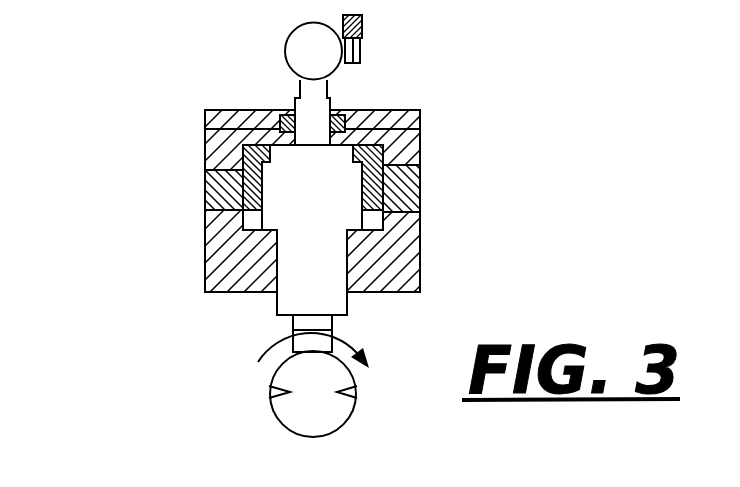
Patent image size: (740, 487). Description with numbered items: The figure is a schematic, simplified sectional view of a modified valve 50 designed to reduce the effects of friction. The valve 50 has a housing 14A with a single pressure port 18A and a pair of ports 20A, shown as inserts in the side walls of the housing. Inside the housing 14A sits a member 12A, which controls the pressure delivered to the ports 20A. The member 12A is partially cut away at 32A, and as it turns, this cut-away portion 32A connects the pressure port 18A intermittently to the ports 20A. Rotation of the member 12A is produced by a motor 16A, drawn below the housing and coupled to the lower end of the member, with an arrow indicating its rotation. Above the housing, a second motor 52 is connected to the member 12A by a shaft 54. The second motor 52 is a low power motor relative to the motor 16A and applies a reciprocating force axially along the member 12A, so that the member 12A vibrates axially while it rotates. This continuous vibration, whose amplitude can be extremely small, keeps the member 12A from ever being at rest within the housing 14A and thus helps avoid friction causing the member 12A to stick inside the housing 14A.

The member 12A is at (312, 230).
The housing 14A is at (242, 281).
The motor 16A is at (292, 408).
The pressure port 18A is at (407, 150).
The ports 20A is at (204, 173).
The cut-away portion 32A is at (262, 189).
The valve 50 is at (145, 190).
The second motor 52 is at (288, 42).
The shaft 54 is at (300, 90).